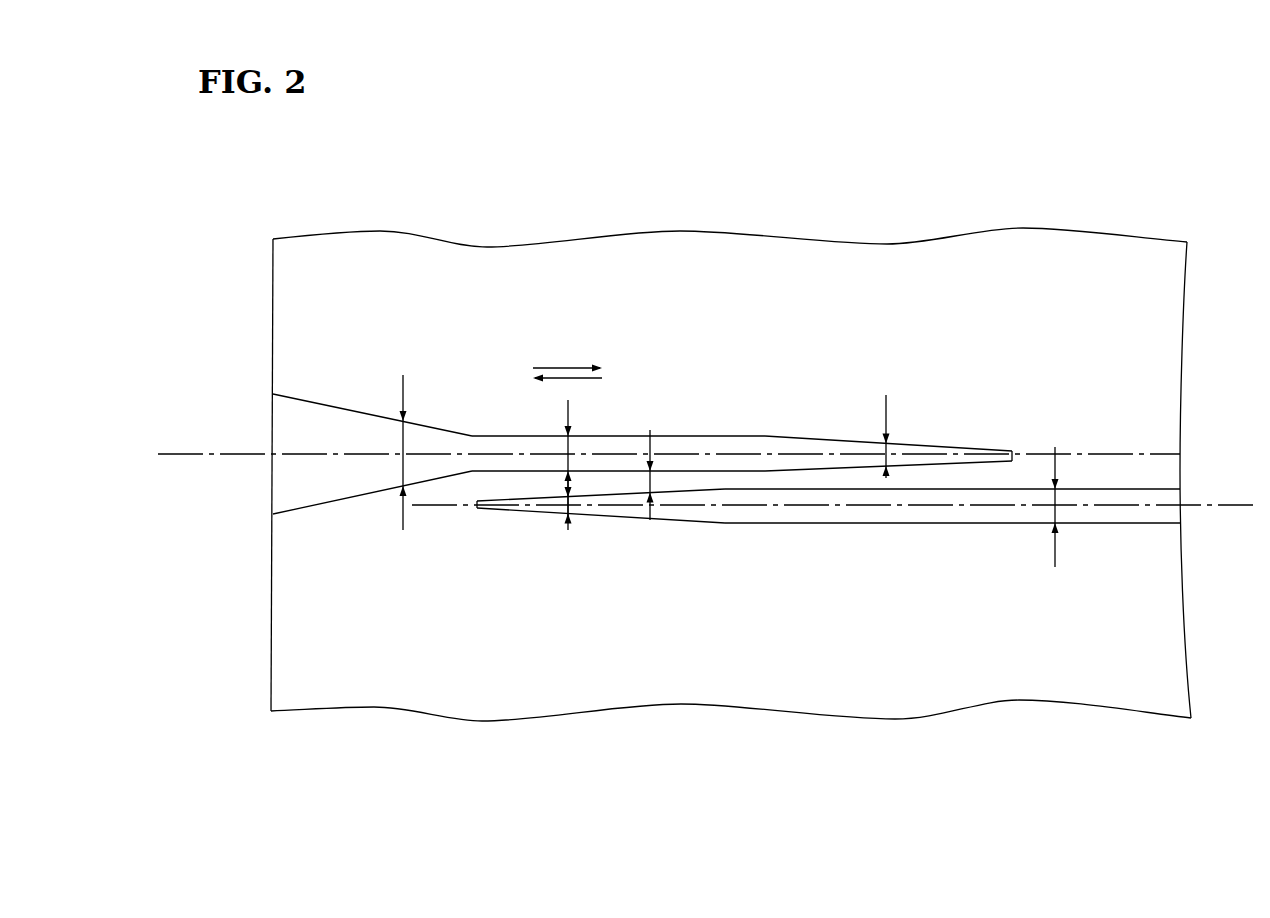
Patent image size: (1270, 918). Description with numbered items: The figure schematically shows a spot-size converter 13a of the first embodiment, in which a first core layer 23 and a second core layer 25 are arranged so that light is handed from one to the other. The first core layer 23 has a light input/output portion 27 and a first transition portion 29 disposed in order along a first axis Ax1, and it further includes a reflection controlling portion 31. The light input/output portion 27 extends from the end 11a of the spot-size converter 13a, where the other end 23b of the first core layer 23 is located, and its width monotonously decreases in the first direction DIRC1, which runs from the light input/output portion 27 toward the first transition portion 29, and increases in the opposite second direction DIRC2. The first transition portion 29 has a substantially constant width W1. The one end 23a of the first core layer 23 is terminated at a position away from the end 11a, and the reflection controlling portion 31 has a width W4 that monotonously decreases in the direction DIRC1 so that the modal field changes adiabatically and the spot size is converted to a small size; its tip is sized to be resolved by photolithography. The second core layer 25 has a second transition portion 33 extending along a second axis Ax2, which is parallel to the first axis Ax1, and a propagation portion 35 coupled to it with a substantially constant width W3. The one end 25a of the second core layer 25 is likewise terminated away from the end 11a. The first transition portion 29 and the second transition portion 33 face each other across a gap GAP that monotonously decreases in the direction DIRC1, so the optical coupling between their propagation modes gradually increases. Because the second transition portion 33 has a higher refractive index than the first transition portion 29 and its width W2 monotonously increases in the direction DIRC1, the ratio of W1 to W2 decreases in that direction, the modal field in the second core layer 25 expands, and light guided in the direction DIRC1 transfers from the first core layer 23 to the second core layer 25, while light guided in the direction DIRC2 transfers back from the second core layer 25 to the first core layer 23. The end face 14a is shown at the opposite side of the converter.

The end of the spot-size converter 11a is at (273, 308).
The spot-size converter 13a is at (1133, 232).
The end face of second substrate 14a is at (1150, 489).
The first core layer 23 is at (643, 387).
The one end of the first core layer 23a is at (1038, 430).
The other end of the first core layer 23b is at (347, 437).
The second core layer 25 is at (814, 570).
The one end of the second core layer 25a is at (469, 534).
The light input/output portion 27 is at (347, 408).
The first transition portion 29 is at (472, 339).
The reflection controlling portion 31 is at (765, 339).
The second transition portion 33 is at (480, 571).
The propagation portion 35 is at (725, 571).
The first axis Ax1 is at (178, 456).
The second axis Ax2 is at (1222, 510).
The width of the first transition portion W1 is at (570, 450).
The width of the second transition portion W2 is at (575, 510).
The width of the propagation portion W3 is at (1057, 502).
The width of the reflection controlling portion W4 is at (888, 450).
The gap GAP is at (653, 480).
The first direction DIRC1 is at (555, 363).
The second direction DIRC2 is at (580, 382).